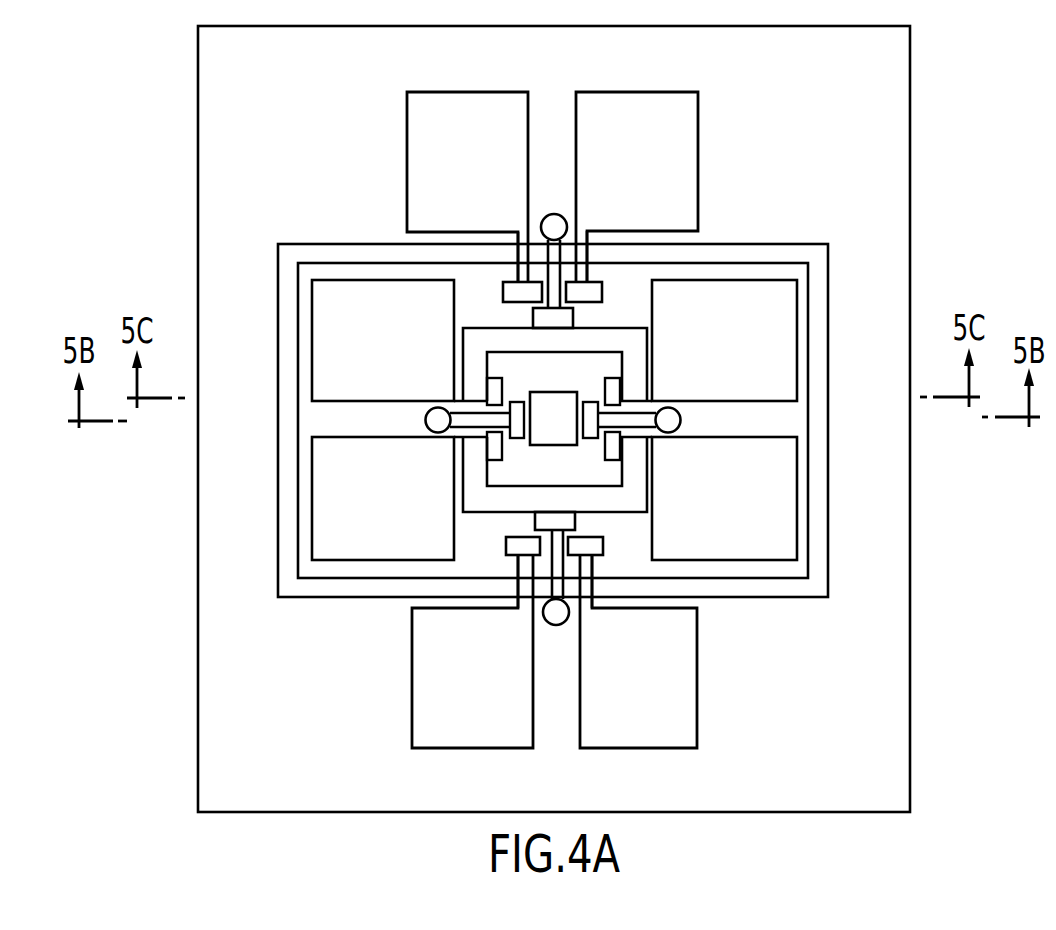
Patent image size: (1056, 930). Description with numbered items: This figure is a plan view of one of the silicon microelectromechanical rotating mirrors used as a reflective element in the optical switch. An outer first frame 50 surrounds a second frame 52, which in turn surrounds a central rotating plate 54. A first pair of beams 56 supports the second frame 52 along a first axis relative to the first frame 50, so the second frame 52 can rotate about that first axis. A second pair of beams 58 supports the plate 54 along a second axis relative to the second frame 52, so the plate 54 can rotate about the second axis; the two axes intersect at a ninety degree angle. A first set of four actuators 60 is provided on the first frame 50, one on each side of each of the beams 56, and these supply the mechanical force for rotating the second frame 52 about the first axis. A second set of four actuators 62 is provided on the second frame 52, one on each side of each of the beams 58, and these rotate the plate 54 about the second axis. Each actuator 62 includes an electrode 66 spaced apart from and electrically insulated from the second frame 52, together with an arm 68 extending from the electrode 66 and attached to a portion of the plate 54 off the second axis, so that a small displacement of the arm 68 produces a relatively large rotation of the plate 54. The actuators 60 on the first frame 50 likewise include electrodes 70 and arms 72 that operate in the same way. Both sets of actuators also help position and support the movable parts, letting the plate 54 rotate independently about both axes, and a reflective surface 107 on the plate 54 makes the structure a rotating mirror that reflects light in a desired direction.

The first frame 50 is at (785, 709).
The second frame 52 is at (465, 312).
The rotating plate 54 is at (541, 385).
The first pair of beams 56 is at (554, 214).
The second pair of beams 58 is at (430, 424).
The first set of actuators 60 is at (452, 172).
The second set of actuators 62 is at (365, 357).
The electrode 66 is at (454, 314).
The arm 68 is at (470, 388).
The electrodes 70 is at (407, 120).
The arms 72 is at (518, 252).
The reflective surface 107 is at (571, 447).